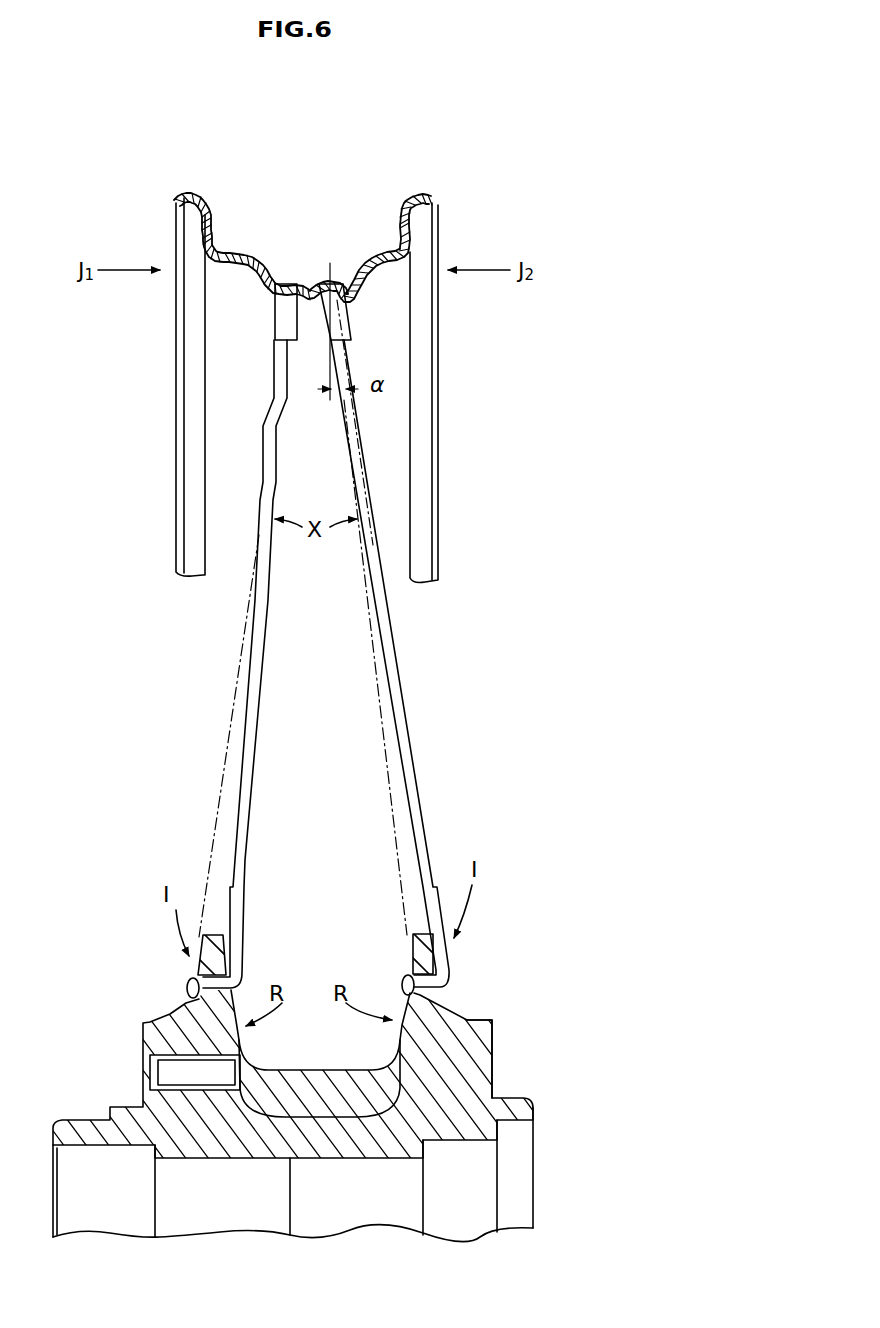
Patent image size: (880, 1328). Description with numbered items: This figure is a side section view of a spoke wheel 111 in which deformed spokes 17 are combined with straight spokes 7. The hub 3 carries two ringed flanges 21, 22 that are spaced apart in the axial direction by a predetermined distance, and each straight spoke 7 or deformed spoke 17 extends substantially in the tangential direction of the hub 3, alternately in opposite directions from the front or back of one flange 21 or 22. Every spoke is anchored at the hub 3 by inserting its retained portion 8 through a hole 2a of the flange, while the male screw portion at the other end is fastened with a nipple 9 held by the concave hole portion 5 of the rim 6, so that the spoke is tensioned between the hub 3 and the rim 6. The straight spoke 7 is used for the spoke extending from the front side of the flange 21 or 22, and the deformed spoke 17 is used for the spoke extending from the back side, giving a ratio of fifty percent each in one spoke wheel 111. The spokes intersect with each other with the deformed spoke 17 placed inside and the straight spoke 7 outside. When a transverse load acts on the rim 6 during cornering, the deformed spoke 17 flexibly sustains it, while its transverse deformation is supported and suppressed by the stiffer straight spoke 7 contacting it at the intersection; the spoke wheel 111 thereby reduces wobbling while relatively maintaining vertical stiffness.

The spoke wheel 111 is at (495, 207).
The rim 6 is at (440, 190).
The concave hole portion 5 is at (350, 304).
The nipple 9 is at (351, 322).
The deformed spoke 17 is at (256, 668).
The straight spoke 7 is at (230, 735).
The retained portion 8 is at (402, 975).
The hole 2a is at (447, 975).
The flange 21 is at (195, 1003).
The flange 22 is at (440, 1003).
The hub 3 is at (498, 1066).